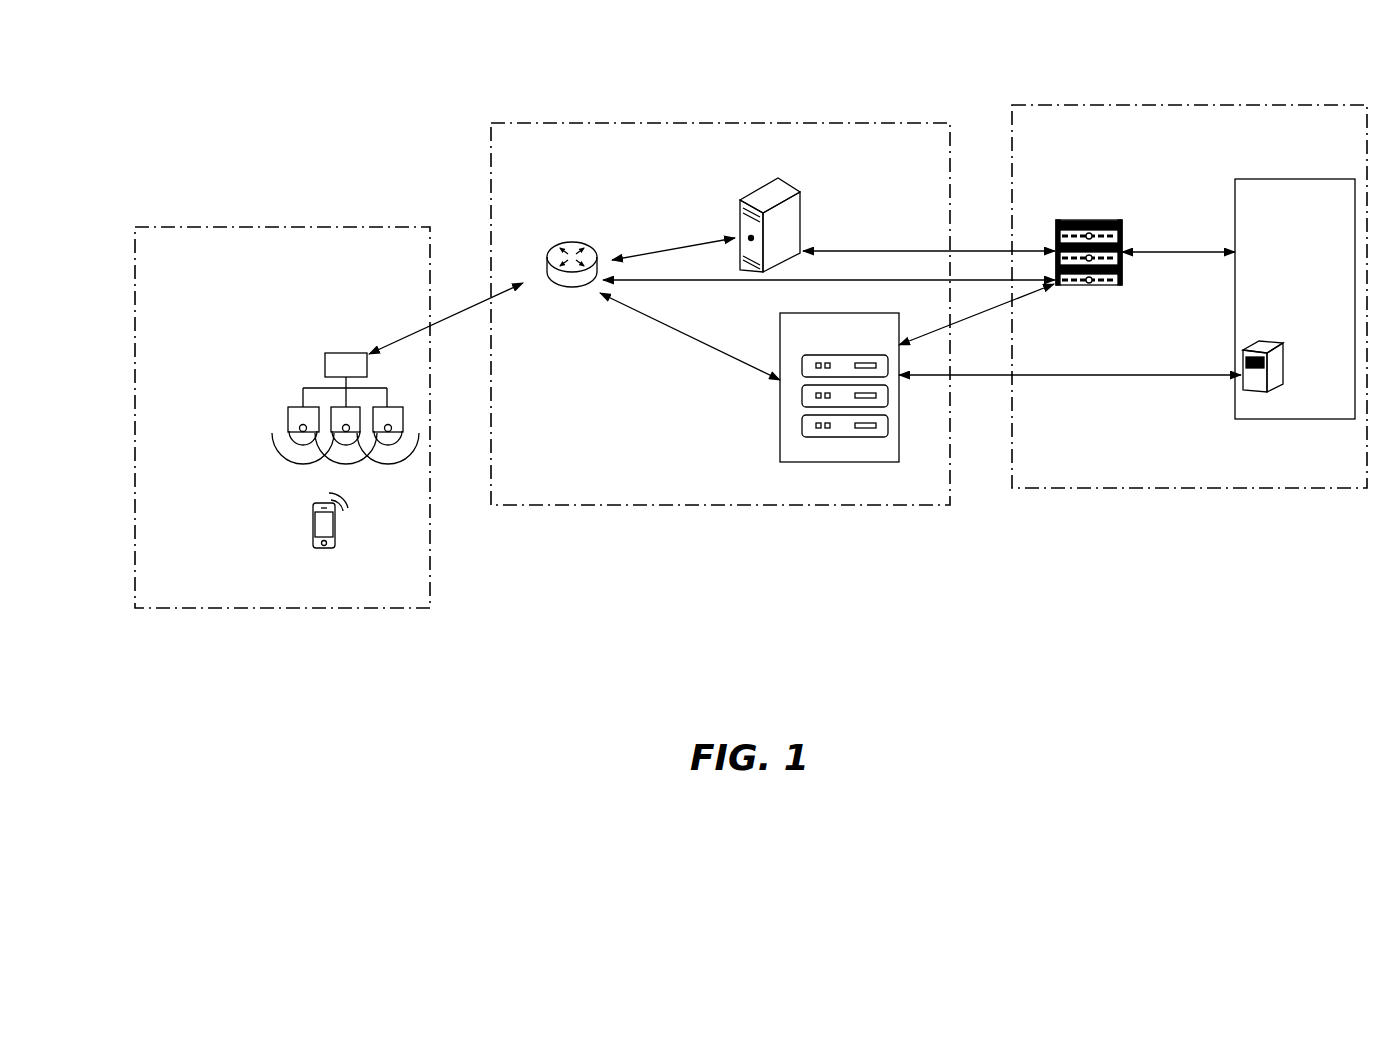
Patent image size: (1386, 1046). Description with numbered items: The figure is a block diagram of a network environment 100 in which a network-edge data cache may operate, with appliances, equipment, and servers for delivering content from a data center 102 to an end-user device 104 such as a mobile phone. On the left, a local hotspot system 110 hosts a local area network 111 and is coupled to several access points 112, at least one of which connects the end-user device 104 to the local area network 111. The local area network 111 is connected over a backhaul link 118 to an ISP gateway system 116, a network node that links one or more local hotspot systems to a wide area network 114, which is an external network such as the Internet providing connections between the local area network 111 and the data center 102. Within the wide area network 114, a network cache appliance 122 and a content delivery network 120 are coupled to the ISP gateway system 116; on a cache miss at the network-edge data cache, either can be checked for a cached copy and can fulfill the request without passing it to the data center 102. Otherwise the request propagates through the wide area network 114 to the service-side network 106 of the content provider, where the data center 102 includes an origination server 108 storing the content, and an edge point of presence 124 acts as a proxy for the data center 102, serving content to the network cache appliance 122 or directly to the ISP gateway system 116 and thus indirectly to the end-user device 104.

The network environment 100 is at (1053, 82).
The data center 102 is at (1295, 299).
The end-user device 104 is at (336, 529).
The service-side network 106 is at (1189, 296).
The origination server 108 is at (1243, 391).
The local hotspot system 110 is at (325, 353).
The local area network 111 is at (282, 417).
The access points 112 is at (390, 422).
The wide area network 114 is at (720, 314).
The ISP gateway system 116 is at (573, 288).
The backhaul link 118 is at (452, 305).
The content delivery network 120 is at (839, 387).
The network cache appliance 122 is at (785, 178).
The edge point of presence 124 is at (1122, 280).